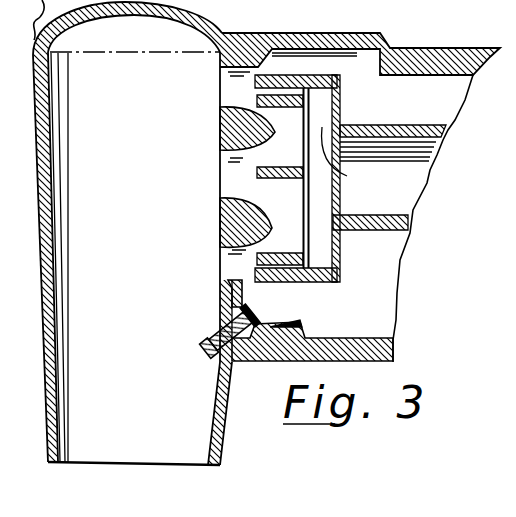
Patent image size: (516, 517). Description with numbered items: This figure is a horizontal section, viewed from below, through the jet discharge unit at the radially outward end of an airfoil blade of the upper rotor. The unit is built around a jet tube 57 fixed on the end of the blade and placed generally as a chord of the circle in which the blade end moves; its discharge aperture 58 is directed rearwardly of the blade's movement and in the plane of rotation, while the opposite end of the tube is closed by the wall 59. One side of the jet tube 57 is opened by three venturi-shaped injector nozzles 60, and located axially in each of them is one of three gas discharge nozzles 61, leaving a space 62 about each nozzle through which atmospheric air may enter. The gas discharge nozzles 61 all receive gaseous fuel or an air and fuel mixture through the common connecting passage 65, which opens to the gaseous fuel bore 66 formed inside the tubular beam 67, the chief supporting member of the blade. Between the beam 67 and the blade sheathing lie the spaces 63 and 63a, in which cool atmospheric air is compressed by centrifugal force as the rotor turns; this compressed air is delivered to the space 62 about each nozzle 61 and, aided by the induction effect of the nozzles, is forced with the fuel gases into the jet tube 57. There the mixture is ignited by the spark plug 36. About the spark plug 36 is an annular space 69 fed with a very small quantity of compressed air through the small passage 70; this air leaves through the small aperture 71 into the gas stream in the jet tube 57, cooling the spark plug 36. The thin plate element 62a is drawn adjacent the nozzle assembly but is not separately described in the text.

The ignition spark plug 36 is at (218, 335).
The jet tube 57 is at (132, 258).
The discharge aperture 58 is at (190, 463).
The wall 59 is at (130, 6).
The injector nozzles 60 is at (230, 90).
The gas discharge nozzles 61 is at (257, 97).
The space 62 is at (220, 198).
The bracket plate 62a is at (267, 72).
The space 63 is at (449, 90).
The space 63a is at (380, 267).
The common connecting passage 65 is at (318, 227).
The gaseous fuel bore 66 is at (395, 197).
The tubular beam 67 is at (356, 236).
The annular space 69 is at (267, 320).
The small passage 70 is at (258, 334).
The small aperture 71 is at (218, 305).